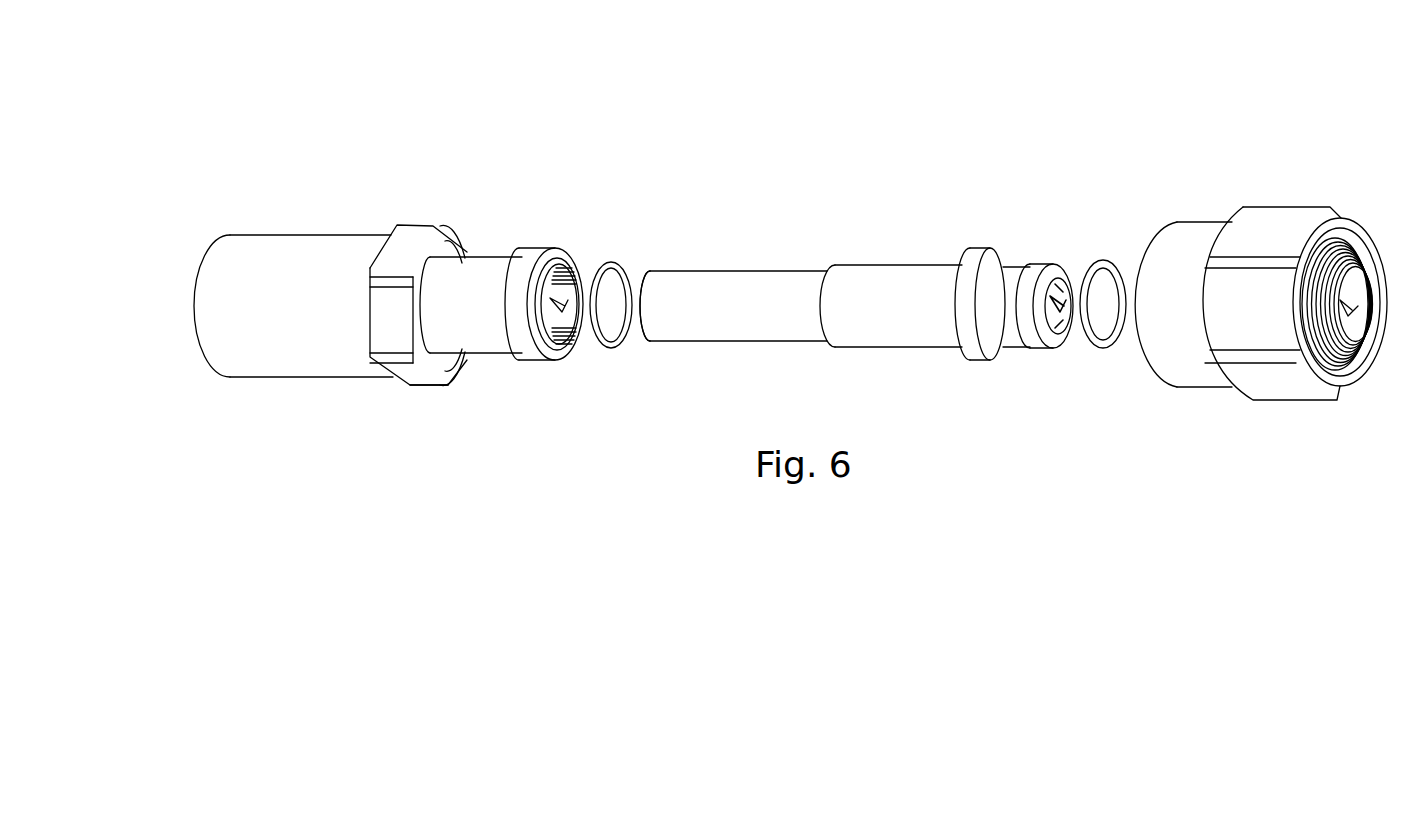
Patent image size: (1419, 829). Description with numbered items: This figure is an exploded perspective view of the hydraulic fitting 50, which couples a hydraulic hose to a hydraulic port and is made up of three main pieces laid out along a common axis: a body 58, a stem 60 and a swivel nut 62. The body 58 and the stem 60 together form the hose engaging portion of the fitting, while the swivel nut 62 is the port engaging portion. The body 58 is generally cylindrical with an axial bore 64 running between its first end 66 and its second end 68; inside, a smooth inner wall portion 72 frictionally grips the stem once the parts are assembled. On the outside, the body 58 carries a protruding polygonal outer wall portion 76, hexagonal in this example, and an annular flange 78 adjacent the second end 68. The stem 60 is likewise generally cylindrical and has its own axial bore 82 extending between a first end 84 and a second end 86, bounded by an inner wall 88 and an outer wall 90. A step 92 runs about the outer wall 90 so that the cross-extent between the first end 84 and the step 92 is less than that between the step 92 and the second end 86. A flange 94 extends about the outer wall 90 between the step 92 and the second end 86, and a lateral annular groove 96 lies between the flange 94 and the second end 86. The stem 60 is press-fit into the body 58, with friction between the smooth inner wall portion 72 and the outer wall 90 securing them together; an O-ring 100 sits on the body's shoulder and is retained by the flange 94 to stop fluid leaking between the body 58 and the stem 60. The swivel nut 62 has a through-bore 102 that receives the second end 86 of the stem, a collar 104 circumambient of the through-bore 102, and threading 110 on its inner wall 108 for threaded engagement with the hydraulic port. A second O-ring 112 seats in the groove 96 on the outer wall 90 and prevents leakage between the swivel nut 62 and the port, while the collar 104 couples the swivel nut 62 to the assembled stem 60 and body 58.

The hydraulic fitting 50 is at (330, 98).
The body 58 is at (345, 378).
The stem 60 is at (798, 241).
The swivel nut 62 is at (1275, 297).
The axial bore 64 is at (567, 356).
The first end 66 is at (203, 272).
The second end 68 is at (568, 253).
The smooth inner wall portion 72 is at (562, 360).
The protruding polygonal outer wall portion 76 is at (427, 380).
The annular flange 78 is at (532, 255).
The axial bore 82 is at (1065, 348).
The first end 84 is at (648, 270).
The second end 86 is at (1057, 262).
The inner wall 88 is at (1065, 347).
The outer wall 90 is at (748, 298).
The step 92 is at (843, 266).
The flange 94 is at (1003, 257).
The lateral annular groove 96 is at (1017, 353).
The O-ring 100 is at (605, 263).
The through-bore 102 is at (1355, 352).
The collar 104 is at (1202, 367).
The inner wall 108 is at (1327, 362).
The threading 110 is at (1352, 272).
The O-ring 112 is at (1097, 260).